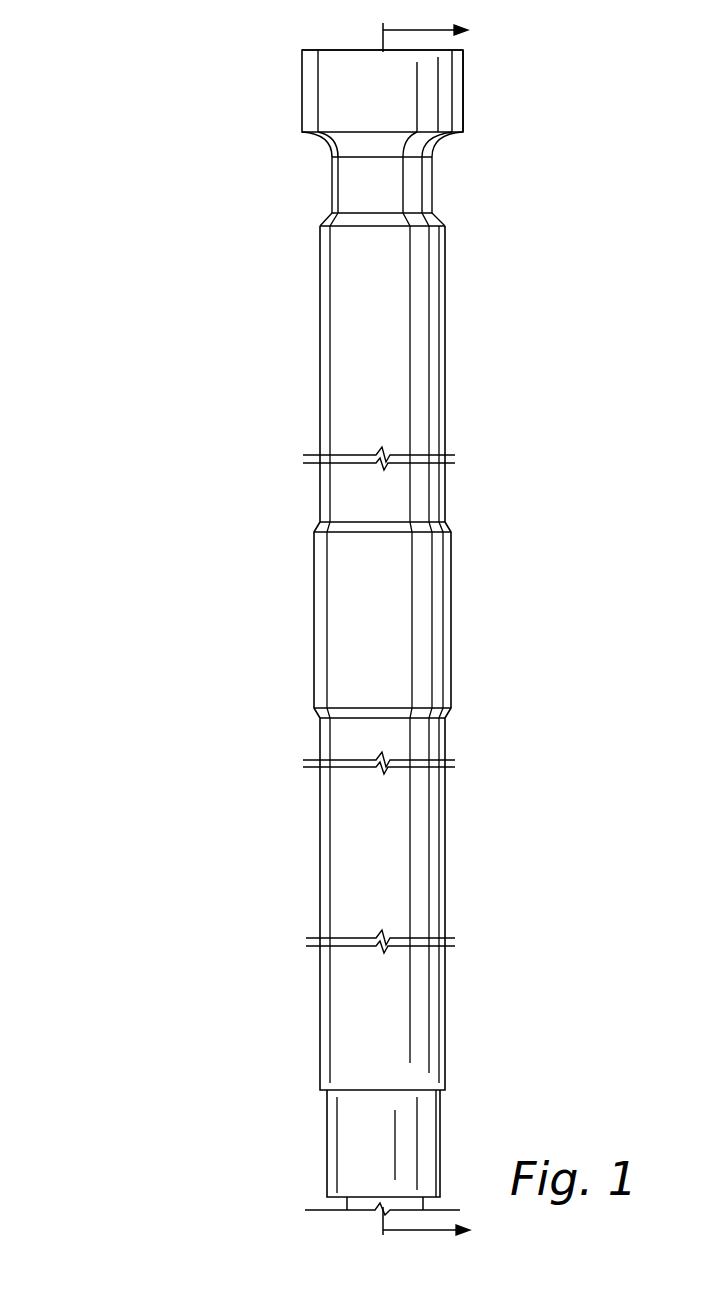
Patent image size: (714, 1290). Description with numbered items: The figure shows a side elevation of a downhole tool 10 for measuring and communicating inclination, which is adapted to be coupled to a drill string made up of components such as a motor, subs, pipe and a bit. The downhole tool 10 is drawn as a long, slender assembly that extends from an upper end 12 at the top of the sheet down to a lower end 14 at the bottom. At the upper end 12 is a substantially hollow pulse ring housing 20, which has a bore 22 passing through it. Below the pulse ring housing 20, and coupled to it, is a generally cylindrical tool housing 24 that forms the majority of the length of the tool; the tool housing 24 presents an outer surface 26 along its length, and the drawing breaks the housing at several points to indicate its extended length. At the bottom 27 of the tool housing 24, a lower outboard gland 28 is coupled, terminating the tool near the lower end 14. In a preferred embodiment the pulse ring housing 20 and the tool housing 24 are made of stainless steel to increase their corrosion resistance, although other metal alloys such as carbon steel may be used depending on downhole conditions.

The downhole tool 10 is at (127, 150).
The upper end 12 is at (300, 80).
The lower end 14 is at (343, 1205).
The pulse ring housing 20 is at (463, 92).
The bore 22 is at (338, 48).
The tool housing 24 is at (318, 395).
The outer surface 26 is at (392, 336).
The bottom 27 is at (357, 1092).
The lower outboard gland 28 is at (436, 1148).